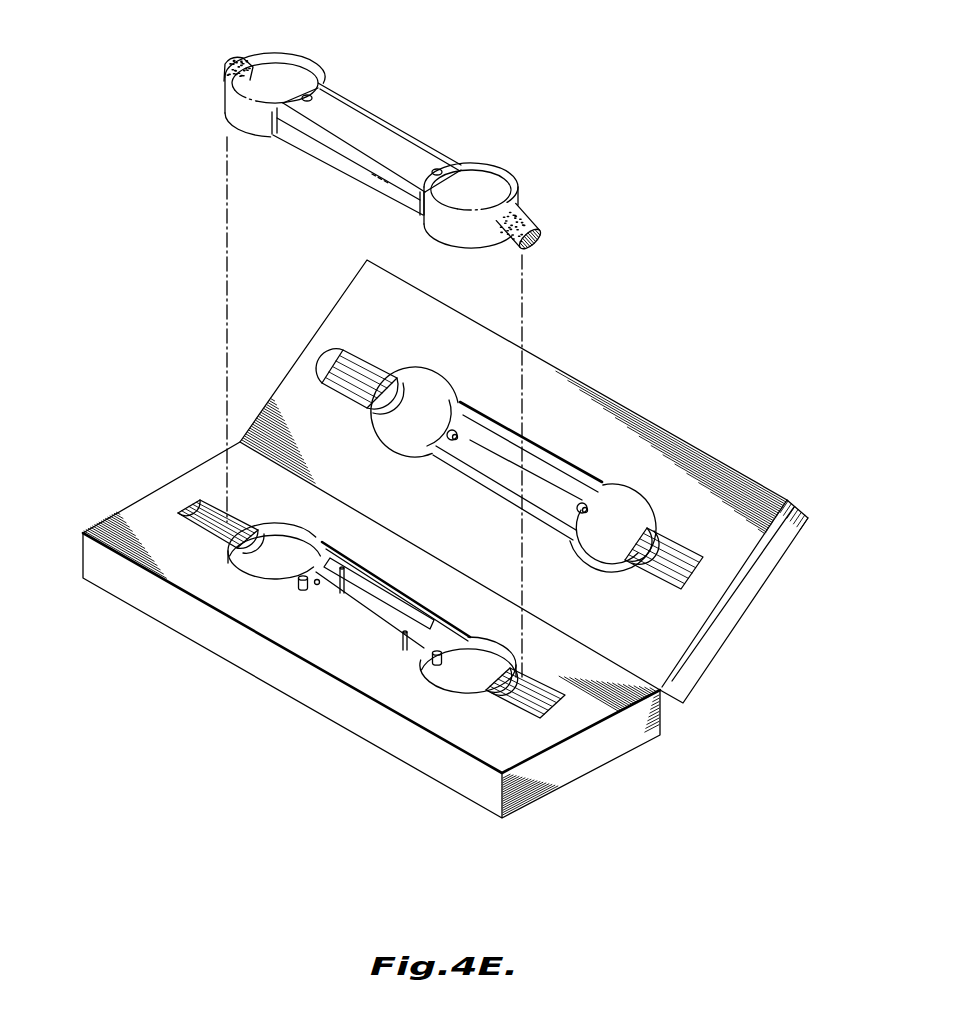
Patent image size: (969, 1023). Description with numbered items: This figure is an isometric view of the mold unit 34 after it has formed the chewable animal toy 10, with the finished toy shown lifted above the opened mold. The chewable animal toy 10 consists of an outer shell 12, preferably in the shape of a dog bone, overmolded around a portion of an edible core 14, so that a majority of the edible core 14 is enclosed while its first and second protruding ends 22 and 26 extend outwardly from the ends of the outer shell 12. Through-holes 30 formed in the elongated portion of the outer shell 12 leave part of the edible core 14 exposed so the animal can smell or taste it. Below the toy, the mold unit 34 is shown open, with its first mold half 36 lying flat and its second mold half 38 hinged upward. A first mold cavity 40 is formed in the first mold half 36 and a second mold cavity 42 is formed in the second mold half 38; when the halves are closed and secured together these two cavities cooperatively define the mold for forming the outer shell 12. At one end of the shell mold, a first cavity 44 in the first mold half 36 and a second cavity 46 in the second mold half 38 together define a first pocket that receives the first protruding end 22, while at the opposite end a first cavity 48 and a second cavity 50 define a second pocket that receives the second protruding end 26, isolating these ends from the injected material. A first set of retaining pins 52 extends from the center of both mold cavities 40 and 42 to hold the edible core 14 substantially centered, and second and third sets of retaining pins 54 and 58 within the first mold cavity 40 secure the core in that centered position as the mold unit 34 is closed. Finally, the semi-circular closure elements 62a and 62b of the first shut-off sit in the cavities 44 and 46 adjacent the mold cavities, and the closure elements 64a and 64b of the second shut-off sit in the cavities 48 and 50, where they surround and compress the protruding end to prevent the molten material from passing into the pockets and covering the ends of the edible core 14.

The chewable animal toy 10 is at (413, 113).
The outer shell 12 is at (348, 88).
The edible core 14 is at (536, 252).
The first protruding end 22 is at (238, 63).
The second protruding end 26 is at (522, 220).
The through-holes 30 is at (309, 96).
The mold unit 34 is at (126, 370).
The first mold half 36 is at (568, 793).
The second mold half 38 is at (766, 602).
The first mold cavity 40 is at (353, 617).
The second mold cavity 42 is at (539, 468).
The first cavity 44 is at (213, 503).
The second cavity 46 is at (347, 381).
The first cavity 48 is at (563, 695).
The second cavity 50 is at (677, 559).
The first set of retaining pins 52 is at (452, 430).
The second set of retaining pins 54 is at (300, 600).
The third set of retaining pins 58 is at (389, 643).
The first semi-circular closure element 62a is at (228, 532).
The second semi-circular closure element 62b is at (393, 380).
The first semi-circular closure element 64a is at (473, 694).
The second semi-circular closure element 64b is at (654, 527).